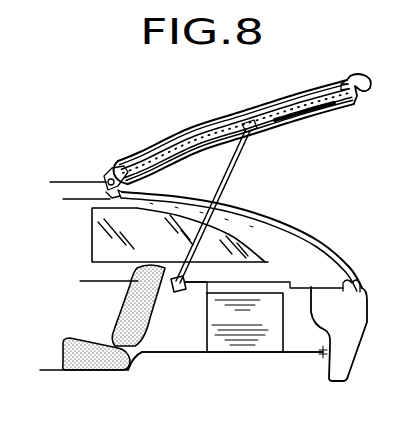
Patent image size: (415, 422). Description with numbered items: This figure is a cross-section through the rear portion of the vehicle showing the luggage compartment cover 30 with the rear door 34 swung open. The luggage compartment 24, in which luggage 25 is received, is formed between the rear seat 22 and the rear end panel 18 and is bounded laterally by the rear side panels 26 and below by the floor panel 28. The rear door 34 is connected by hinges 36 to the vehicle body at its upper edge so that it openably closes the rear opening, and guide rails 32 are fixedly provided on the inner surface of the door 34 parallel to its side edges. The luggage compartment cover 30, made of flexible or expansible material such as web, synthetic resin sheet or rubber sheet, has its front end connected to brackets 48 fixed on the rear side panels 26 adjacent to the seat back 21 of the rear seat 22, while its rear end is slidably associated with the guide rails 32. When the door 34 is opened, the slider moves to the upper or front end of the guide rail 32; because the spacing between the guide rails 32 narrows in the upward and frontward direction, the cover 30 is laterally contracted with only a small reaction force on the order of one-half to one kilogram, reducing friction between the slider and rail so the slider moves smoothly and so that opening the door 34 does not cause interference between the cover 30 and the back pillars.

The rear end panel 18 is at (354, 327).
The seat back 21 is at (137, 297).
The rear seat 22 is at (80, 329).
The luggage compartment 24 is at (300, 341).
The luggage 25 is at (258, 312).
The rear side panel 26 is at (183, 336).
The floor panel 28 is at (176, 357).
The luggage compartment cover 30 is at (236, 176).
The guide rail 32 is at (320, 118).
The rear door 34 is at (234, 113).
The hinge 36 is at (100, 182).
The bracket 48 is at (173, 280).